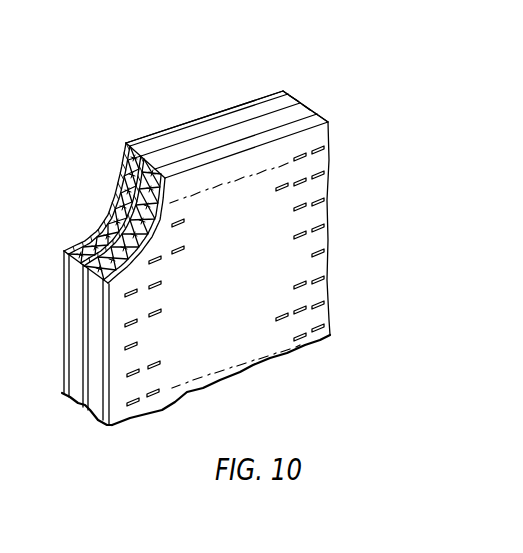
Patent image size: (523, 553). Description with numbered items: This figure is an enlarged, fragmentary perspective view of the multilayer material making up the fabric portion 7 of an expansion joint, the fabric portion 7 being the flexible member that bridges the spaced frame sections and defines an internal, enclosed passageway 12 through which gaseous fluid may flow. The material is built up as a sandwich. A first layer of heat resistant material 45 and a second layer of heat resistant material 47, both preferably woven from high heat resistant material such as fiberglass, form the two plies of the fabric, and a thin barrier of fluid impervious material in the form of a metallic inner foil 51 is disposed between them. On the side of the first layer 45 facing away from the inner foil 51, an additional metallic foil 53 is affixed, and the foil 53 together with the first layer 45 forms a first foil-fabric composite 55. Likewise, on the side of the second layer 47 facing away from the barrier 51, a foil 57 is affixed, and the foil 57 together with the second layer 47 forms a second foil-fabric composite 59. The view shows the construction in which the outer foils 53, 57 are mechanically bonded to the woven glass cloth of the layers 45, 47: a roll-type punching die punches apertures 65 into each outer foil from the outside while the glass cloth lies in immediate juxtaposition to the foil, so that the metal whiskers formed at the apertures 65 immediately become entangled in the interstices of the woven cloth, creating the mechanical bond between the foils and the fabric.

The internal enclosed passageway 12 is at (99, 179).
The fabric portion 7 is at (93, 200).
The additional metallic foil 53 is at (234, 106).
The first layer of heat resistant material 45 is at (270, 103).
The metallic inner foil 51 is at (293, 107).
The second layer of heat resistant material 47 is at (312, 117).
The foil 57 is at (324, 135).
The apertures 65 is at (318, 177).
The first foil-fabric composite 55 is at (62, 395).
The second foil-fabric composite 59 is at (86, 423).